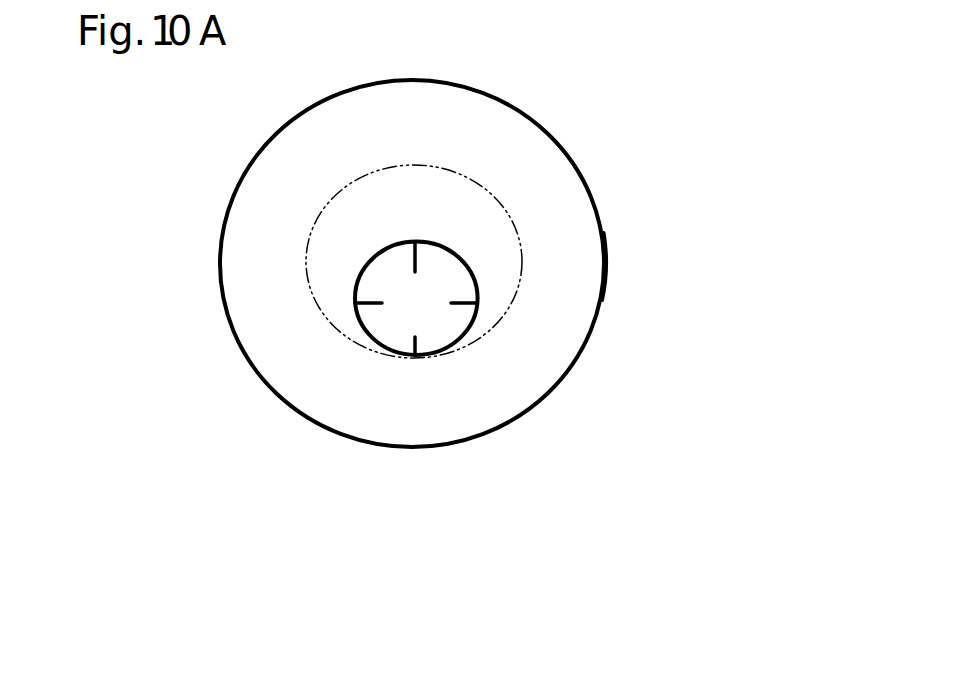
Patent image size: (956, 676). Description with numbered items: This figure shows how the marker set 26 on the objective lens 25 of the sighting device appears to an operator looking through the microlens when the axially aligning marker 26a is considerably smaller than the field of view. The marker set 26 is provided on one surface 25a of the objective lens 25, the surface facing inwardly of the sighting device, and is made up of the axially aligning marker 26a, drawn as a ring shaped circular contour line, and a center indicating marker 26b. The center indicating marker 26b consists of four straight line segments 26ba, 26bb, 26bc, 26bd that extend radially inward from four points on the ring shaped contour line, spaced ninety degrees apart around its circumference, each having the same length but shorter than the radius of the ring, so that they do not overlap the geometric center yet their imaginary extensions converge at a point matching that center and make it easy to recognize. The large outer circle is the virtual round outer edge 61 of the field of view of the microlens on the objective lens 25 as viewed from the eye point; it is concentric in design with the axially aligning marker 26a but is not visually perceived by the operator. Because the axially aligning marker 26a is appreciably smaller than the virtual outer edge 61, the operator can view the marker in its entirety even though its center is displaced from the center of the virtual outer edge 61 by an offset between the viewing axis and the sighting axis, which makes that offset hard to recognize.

The objective lens 25 is at (525, 167).
The surface of the objective lens 25a is at (568, 252).
The virtual round outer edge of the field of view 61 is at (308, 238).
The marker set 26 is at (400, 435).
The axially aligning marker 26a is at (477, 277).
The center indicating marker 26b is at (348, 404).
The straight line segment 26ba is at (365, 305).
The straight line segment 26bb is at (413, 270).
The straight line segment 26bc is at (500, 401).
The straight line segment 26bd is at (415, 340).